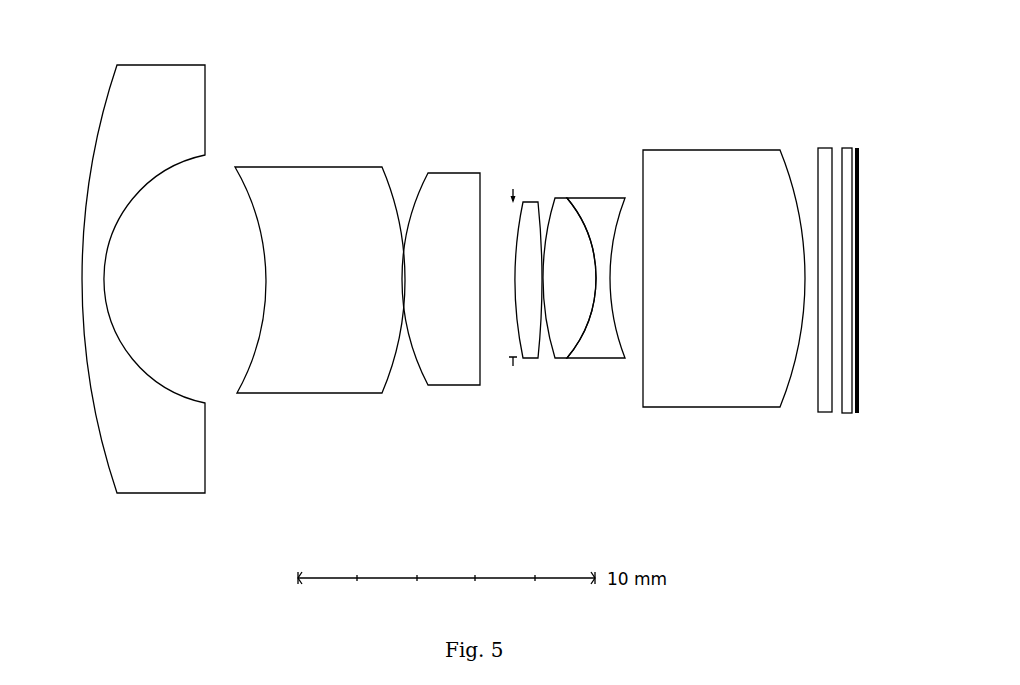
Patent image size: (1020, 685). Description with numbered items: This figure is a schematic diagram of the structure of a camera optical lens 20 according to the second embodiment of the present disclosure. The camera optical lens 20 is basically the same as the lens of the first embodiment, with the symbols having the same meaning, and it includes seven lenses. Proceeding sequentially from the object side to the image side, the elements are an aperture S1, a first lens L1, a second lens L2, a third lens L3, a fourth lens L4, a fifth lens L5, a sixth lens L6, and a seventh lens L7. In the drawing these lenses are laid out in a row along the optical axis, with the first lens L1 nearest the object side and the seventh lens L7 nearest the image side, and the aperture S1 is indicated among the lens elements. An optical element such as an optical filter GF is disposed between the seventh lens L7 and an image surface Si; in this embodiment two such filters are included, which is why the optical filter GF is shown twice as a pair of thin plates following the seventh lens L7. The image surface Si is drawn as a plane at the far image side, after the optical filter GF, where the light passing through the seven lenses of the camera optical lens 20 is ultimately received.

The camera optical lens 20 is at (495, 35).
The first lens L1 is at (143, 262).
The second lens L2 is at (320, 259).
The third lens L3 is at (441, 262).
The fourth lens L4 is at (528, 266).
The fifth lens L5 is at (569, 260).
The sixth lens L6 is at (596, 263).
The seventh lens L7 is at (724, 259).
The aperture S1 is at (513, 371).
The optical filter GF is at (817, 139).
The image surface Si is at (859, 147).